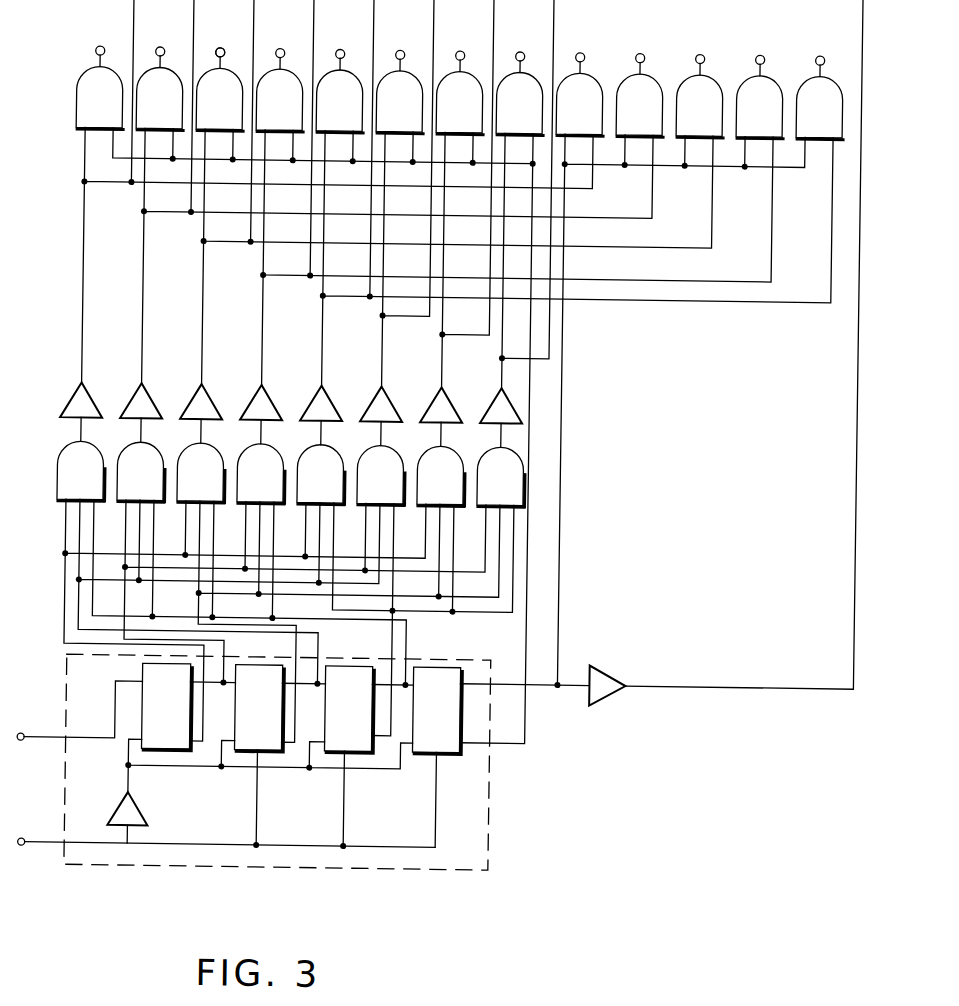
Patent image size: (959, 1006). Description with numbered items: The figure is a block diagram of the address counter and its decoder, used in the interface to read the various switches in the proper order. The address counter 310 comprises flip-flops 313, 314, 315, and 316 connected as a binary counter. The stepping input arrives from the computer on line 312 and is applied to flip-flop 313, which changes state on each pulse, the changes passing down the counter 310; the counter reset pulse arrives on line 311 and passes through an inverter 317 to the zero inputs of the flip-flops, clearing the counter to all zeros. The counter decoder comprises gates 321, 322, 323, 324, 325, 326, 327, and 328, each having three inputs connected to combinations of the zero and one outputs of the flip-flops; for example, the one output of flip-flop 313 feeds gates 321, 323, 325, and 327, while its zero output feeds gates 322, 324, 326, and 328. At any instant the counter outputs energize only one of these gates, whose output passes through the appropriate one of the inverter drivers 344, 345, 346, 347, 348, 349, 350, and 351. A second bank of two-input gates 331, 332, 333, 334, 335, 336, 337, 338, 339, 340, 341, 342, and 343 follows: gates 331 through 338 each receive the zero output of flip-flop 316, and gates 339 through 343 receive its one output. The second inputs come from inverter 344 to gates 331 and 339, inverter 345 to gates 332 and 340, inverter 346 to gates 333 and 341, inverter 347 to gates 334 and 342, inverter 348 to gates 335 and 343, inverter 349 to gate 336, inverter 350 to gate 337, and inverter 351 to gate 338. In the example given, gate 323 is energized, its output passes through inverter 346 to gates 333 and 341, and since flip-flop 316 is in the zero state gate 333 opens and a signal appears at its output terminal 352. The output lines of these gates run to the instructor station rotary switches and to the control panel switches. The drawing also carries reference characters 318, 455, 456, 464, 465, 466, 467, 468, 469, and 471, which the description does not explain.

The address counter 310 is at (478, 837).
The line 311 is at (51, 847).
The line 312 is at (51, 742).
The flip-flop 313 is at (158, 707).
The flip-flop 314 is at (274, 680).
The flip-flop 315 is at (364, 680).
The flip-flop 316 is at (457, 680).
The inverter 317 is at (138, 822).
The inverter 318 is at (609, 681).
The gate 321 is at (66, 462).
The gate 322 is at (126, 462).
The gate 323 is at (186, 462).
The gate 324 is at (246, 462).
The gate 325 is at (306, 462).
The gate 326 is at (366, 462).
The gate 327 is at (426, 462).
The gate 328 is at (486, 462).
The gate 331 is at (104, 88).
The gate 332 is at (164, 88).
The gate 333 is at (228, 88).
The gate 334 is at (284, 88).
The gate 335 is at (344, 88).
The gate 336 is at (404, 88).
The gate 337 is at (464, 88).
The gate 338 is at (524, 88).
The gate 339 is at (584, 88).
The gate 340 is at (644, 88).
The gate 341 is at (704, 88).
The gate 342 is at (764, 88).
The gate 343 is at (824, 88).
The inverter driver 344 is at (75, 402).
The inverter driver 345 is at (135, 402).
The inverter driver 346 is at (195, 402).
The inverter driver 347 is at (255, 402).
The inverter driver 348 is at (315, 402).
The inverter driver 349 is at (375, 402).
The inverter driver 350 is at (435, 403).
The inverter driver 351 is at (495, 403).
The output terminal 352 is at (232, 62).
The output line 455 is at (812, 683).
The input line 456 is at (81, 376).
The input line 464 is at (141, 376).
The input line 465 is at (201, 376).
The input line 466 is at (261, 376).
The input line 467 is at (321, 376).
The input line 468 is at (381, 376).
The input line 469 is at (441, 376).
The input line 471 is at (500, 378).